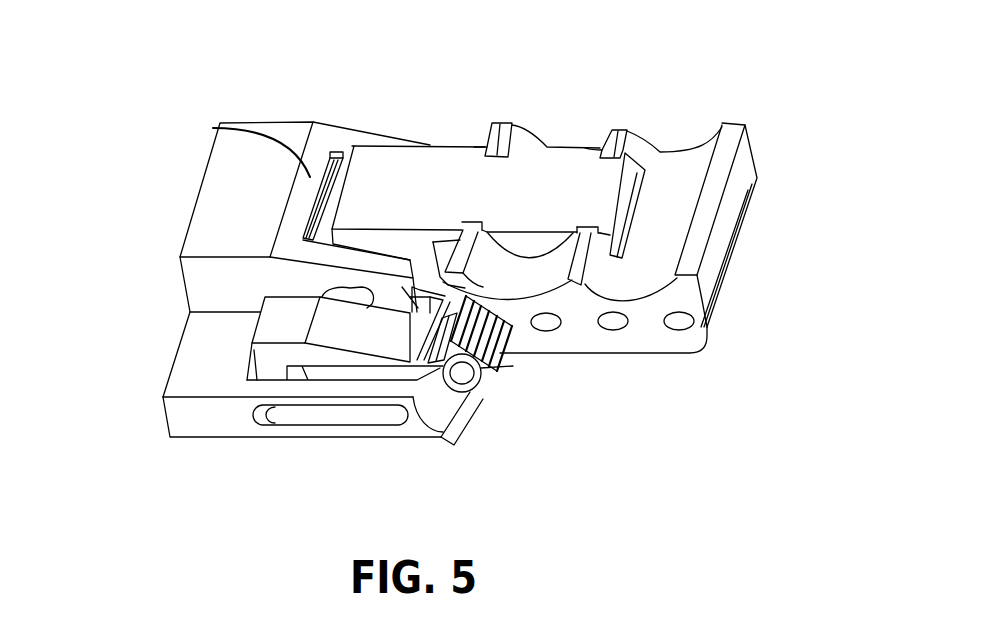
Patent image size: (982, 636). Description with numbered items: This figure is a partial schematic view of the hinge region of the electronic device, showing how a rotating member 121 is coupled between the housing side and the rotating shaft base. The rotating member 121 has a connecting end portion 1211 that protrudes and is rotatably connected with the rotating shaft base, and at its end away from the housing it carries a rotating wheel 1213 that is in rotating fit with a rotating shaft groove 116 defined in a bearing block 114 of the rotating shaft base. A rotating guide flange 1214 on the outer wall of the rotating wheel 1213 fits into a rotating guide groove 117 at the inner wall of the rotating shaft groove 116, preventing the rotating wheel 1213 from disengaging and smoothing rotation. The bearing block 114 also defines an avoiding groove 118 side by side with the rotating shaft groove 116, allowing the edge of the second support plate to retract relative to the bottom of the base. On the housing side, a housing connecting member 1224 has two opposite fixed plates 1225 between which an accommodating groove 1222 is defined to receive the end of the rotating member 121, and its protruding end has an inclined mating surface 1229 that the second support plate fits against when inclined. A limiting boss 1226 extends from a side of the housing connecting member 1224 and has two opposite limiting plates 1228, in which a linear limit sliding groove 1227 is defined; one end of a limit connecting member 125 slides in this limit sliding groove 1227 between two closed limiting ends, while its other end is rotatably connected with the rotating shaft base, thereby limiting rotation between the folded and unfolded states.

The bearing block 114 is at (645, 345).
The rotating shaft groove 116 is at (536, 277).
The rotating guide groove 117 is at (640, 163).
The avoiding groove 118 is at (670, 228).
The rotating member 121 is at (448, 167).
The connecting end portion 1211 is at (553, 173).
The rotating wheel 1213 is at (525, 240).
The rotating guide flange 1214 is at (592, 243).
The limit connecting member 125 is at (357, 358).
The accommodating groove 1222 is at (336, 158).
The housing connecting member 1224 is at (223, 202).
The fixed plate 1225 is at (362, 136).
The limiting boss 1226 is at (185, 432).
The limit sliding groove 1227 is at (317, 422).
The limiting plate 1228 is at (430, 453).
The inclined mating surface 1229 is at (220, 122).